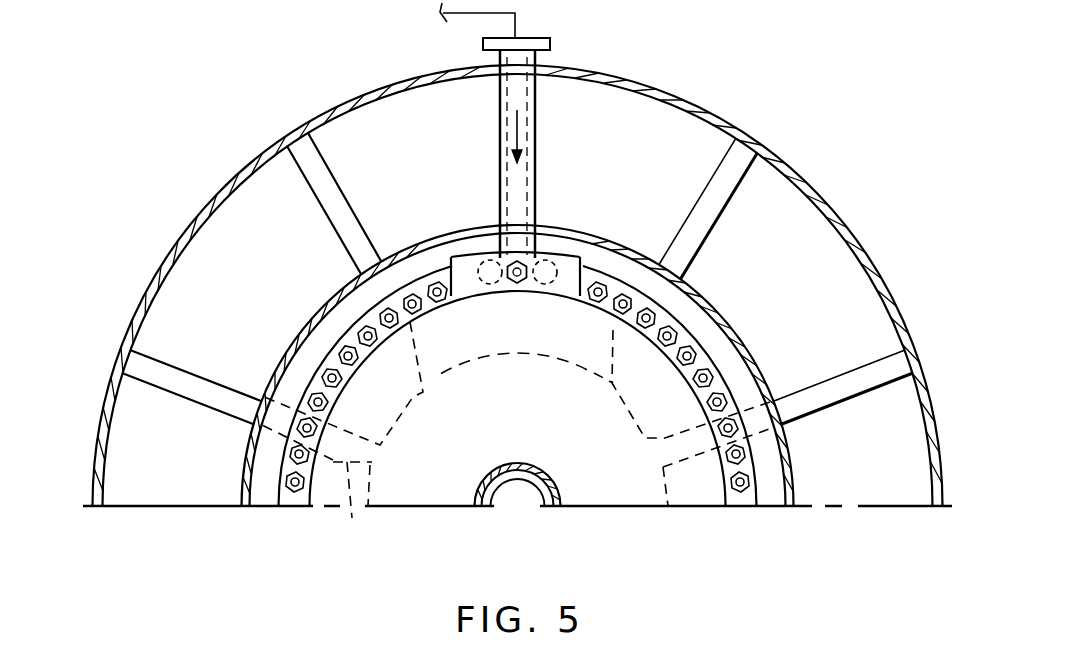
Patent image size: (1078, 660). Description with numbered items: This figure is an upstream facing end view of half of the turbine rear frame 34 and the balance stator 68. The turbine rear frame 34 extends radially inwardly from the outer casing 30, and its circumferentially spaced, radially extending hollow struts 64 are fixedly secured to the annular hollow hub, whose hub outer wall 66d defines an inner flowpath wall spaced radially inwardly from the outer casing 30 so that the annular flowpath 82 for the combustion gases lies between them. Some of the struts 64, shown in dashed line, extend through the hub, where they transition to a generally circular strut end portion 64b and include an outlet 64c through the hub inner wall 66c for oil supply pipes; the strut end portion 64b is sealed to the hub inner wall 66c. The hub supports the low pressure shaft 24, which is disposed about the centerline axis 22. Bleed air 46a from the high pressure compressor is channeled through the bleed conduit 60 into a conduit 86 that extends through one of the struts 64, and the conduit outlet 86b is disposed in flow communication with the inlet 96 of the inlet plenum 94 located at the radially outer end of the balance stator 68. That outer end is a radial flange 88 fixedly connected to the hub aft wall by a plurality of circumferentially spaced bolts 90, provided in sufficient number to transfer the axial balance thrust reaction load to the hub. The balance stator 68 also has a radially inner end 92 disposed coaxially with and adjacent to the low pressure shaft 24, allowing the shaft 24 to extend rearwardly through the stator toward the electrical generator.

The longitudinal axial centerline axis 22 is at (509, 511).
The low pressure shaft 24 is at (532, 510).
The outer casing 30 is at (830, 206).
The turbine rear frame 34 is at (760, 145).
The bleed air 46a is at (521, 133).
The bleed conduit 60 is at (470, 16).
The struts 64 is at (536, 110).
The strut end portion 64b is at (500, 506).
The strut outlet 64c is at (372, 455).
The hub inner wall 66c is at (443, 375).
The hub outer wall 66d is at (752, 352).
The balance stator 68 is at (329, 506).
The annular flowpath 82 is at (676, 184).
The conduit 86 is at (542, 58).
The conduit outlet 86b is at (492, 258).
The radial flange 88 is at (742, 503).
The bolts 90 is at (284, 502).
The radially inner end 92 is at (546, 512).
The inlet plenum 94 is at (576, 262).
The inlet 96 is at (541, 284).